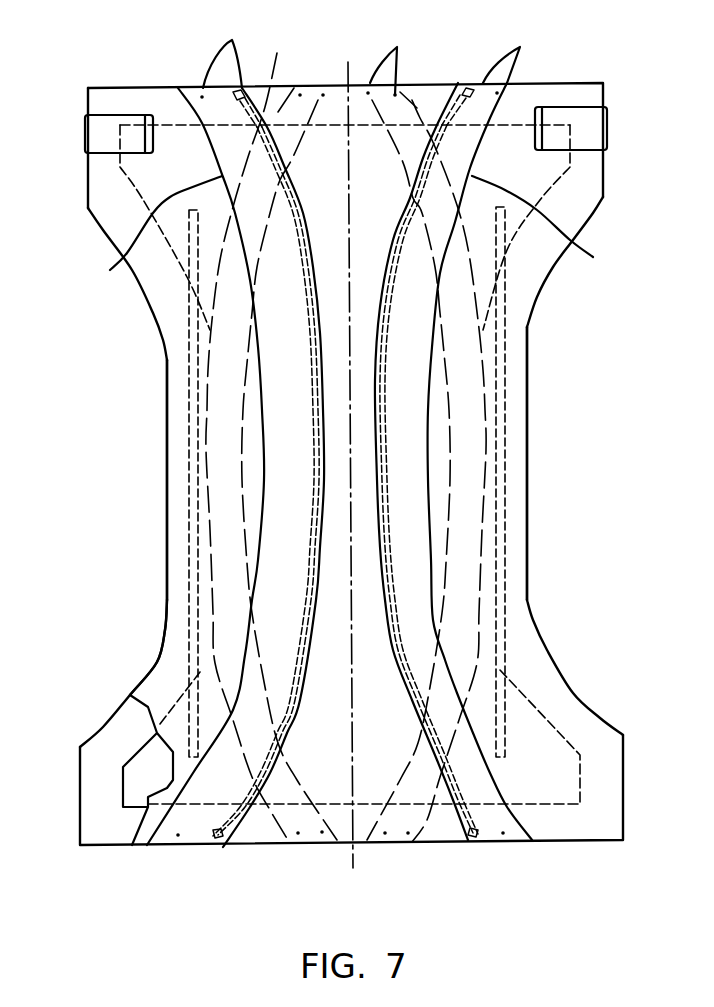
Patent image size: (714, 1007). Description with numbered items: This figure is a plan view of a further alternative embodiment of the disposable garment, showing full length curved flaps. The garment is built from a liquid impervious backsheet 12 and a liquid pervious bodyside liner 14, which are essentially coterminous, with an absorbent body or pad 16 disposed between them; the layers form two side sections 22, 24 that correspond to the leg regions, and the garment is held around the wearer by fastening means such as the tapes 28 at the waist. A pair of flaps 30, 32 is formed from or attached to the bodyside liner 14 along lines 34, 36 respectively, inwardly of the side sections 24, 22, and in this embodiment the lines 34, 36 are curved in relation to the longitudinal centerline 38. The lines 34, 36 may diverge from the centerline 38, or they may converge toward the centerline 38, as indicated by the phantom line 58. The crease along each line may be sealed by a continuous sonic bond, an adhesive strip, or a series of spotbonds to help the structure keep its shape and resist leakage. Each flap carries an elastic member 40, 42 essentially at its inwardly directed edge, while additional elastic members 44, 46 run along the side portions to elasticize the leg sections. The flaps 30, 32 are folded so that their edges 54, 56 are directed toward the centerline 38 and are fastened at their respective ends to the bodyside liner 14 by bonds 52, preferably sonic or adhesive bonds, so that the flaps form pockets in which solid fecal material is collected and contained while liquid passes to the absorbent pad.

The backsheet 12 is at (105, 735).
The bodyside liner 14 is at (157, 678).
The absorbent body or pad 16 is at (132, 788).
The side section 22 is at (167, 362).
The side section 24 is at (527, 350).
The tapes 28 is at (85, 132).
The flap 30 is at (484, 104).
The flap 32 is at (215, 108).
The line 34 is at (546, 223).
The line 36 is at (152, 237).
The centerline 38 is at (348, 70).
The elastic member 40 is at (457, 83).
The elastic member 42 is at (271, 432).
The elastic member 44 is at (505, 407).
The elastic member 46 is at (188, 440).
The bonds 52 is at (356, 429).
The edge 54 is at (456, 829).
The edge 56 is at (247, 813).
The phantom line 58 is at (313, 97).